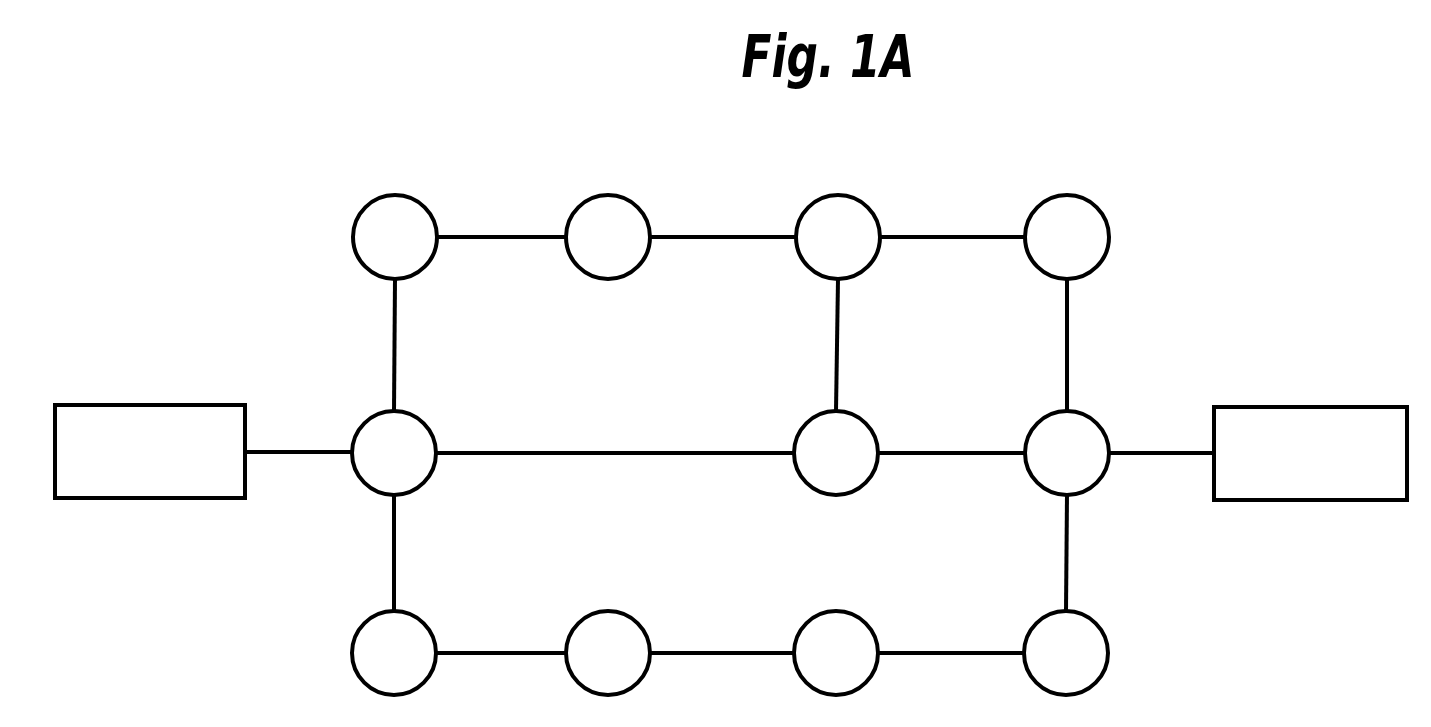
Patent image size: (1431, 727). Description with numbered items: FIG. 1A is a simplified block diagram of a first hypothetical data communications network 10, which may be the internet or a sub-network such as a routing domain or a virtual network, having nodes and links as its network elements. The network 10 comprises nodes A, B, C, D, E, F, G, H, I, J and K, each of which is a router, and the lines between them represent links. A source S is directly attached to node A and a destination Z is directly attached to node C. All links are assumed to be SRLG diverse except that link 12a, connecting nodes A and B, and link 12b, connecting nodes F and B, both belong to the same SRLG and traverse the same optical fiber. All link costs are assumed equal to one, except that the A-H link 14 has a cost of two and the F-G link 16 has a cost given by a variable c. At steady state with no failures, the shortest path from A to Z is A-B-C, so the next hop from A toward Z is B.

The network 10 is at (283, 218).
The link 12a is at (524, 452).
The link 12b is at (840, 350).
The A-H link 14 is at (393, 553).
The F-G link 16 is at (923, 235).